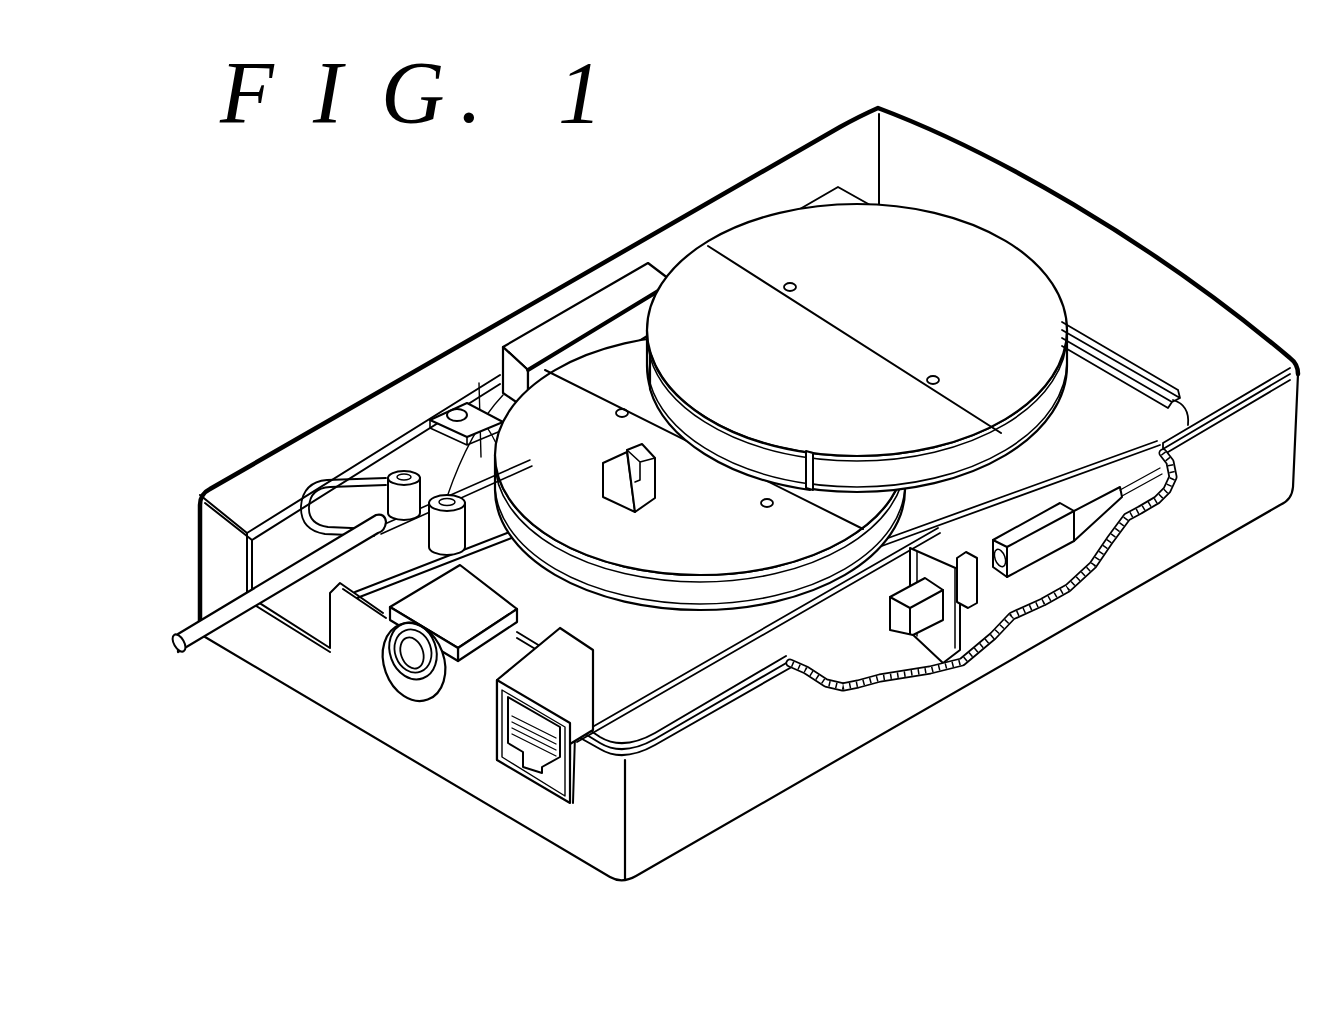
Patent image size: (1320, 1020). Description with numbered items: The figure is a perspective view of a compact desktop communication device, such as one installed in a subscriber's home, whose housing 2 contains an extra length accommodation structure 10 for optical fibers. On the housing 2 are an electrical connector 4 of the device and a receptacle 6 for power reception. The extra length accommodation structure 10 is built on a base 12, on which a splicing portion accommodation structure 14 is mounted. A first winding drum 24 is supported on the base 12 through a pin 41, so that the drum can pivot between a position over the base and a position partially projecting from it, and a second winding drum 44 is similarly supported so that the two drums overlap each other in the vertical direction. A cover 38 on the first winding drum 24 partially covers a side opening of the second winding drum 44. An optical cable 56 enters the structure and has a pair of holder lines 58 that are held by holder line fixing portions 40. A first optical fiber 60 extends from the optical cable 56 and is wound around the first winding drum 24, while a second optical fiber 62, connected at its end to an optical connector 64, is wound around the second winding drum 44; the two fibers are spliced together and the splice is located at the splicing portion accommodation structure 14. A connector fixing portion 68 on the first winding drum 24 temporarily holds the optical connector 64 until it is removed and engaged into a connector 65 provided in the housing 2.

The housing 2 is at (832, 747).
The electrical connector 4 is at (523, 763).
The receptacle for power reception 6 is at (400, 680).
The extra length accommodation structure 10 is at (781, 384).
The base 12 is at (1098, 423).
The splicing portion accommodation structure 14 is at (593, 310).
The first winding drum 24 is at (713, 568).
The cover 38 is at (742, 455).
The holder line fixing portions 40 is at (402, 477).
The pin 41 is at (447, 497).
The second winding drum 44 is at (957, 260).
The optical cable 56 is at (233, 624).
The holder lines 58 is at (383, 513).
The first optical fiber 60 is at (461, 407).
The second optical fiber 62 is at (1098, 357).
The optical connector 64 is at (1023, 567).
The connector 65 is at (923, 623).
The connector fixing portion 68 is at (655, 462).